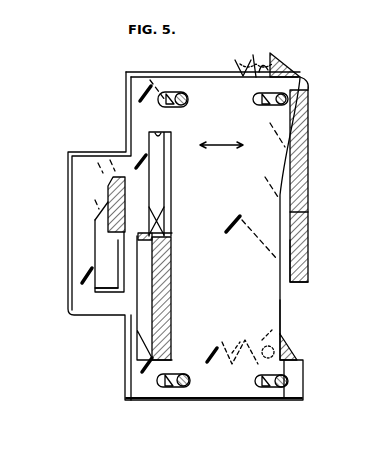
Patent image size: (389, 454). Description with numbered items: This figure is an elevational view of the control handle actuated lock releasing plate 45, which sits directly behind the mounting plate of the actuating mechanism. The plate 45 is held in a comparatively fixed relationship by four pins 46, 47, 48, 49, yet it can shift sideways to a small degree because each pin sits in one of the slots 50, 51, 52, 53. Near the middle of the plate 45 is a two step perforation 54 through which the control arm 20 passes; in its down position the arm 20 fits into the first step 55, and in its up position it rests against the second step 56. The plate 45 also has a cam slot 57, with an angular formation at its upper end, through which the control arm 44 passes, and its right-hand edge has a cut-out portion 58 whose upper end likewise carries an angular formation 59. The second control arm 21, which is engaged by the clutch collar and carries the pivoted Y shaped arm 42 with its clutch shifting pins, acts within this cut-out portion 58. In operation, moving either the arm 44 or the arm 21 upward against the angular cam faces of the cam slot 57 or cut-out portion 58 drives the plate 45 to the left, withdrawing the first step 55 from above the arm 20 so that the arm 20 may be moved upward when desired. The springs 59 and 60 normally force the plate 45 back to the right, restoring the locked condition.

The control arm 20 is at (172, 322).
The control arm 21 is at (309, 252).
The Y shaped arm 42 is at (309, 198).
The control arm 44 is at (110, 194).
The plate 45 is at (118, 90).
The pin 46 is at (180, 93).
The pin 47 is at (286, 102).
The pin 48 is at (288, 386).
The pin 49 is at (182, 388).
The slot 50 is at (170, 93).
The slot 51 is at (262, 105).
The slot 52 is at (257, 380).
The slot 53 is at (170, 376).
The two step perforation 54 is at (152, 190).
The first step 55 is at (150, 234).
The second step 56 is at (160, 132).
The cam slot 57 is at (101, 254).
The cut-out portion 58 is at (281, 314).
The angular formation 59 is at (306, 130).
The spring 60 is at (252, 60).